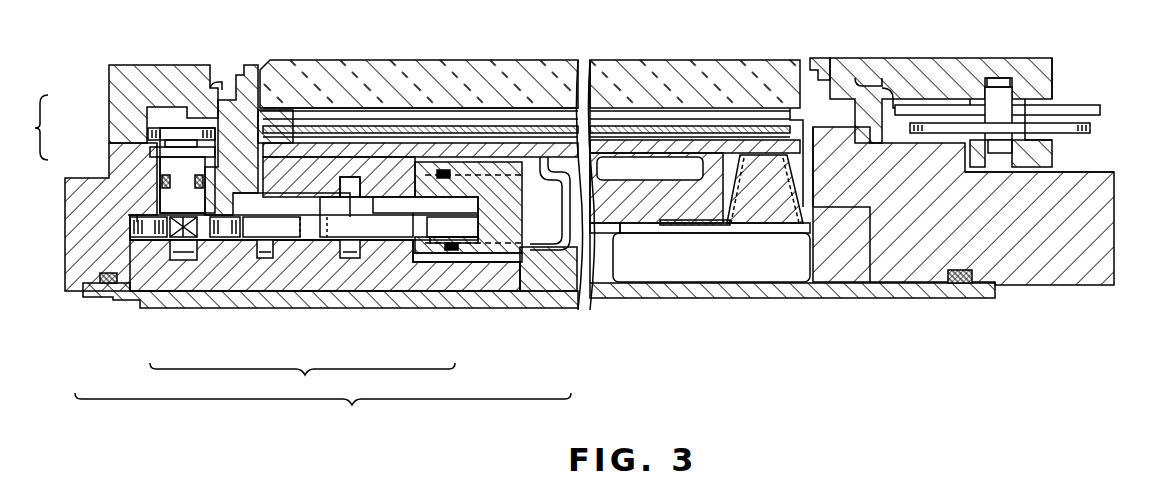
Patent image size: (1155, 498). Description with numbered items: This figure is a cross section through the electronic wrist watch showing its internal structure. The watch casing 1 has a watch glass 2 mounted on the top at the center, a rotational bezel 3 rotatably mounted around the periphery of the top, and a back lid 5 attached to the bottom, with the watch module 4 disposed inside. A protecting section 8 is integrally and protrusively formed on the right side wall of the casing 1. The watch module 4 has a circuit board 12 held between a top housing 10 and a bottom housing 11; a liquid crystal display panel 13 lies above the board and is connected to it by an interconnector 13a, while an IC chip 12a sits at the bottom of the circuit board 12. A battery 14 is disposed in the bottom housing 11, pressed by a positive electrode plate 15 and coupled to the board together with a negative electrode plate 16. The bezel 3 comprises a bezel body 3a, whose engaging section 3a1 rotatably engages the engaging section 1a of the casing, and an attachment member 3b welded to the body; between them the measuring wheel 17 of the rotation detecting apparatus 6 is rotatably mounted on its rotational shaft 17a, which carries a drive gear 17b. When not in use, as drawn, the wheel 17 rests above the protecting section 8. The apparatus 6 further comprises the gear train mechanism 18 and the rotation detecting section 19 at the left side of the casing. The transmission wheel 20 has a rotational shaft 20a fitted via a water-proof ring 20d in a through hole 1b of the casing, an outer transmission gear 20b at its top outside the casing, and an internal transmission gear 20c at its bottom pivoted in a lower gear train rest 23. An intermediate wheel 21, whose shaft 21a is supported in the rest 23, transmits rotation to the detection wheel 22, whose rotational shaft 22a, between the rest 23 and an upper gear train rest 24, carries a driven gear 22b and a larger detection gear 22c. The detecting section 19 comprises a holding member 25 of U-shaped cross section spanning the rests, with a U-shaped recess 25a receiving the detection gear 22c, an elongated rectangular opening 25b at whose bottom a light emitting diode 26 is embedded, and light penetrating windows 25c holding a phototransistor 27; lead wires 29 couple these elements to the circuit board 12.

The watch casing 1 is at (1083, 229).
The engaging section 1a is at (230, 88).
The through hole 1b is at (155, 198).
The watch glass 2 is at (650, 68).
The rotational bezel 3 is at (150, 75).
The bezel body 3a is at (1035, 62).
The engaging section 3a1 is at (880, 40).
The attachment member 3b is at (1052, 150).
The watch module 4 is at (730, 140).
The back lid 5 is at (867, 300).
The rotation detecting apparatus 6 is at (323, 411).
The protecting section 8 is at (1108, 172).
The top housing 10 is at (790, 127).
The bottom housing 11 is at (642, 218).
The circuit board 12 is at (627, 145).
The IC chip 12a is at (668, 163).
The liquid crystal display panel 13 is at (707, 120).
The interconnector 13a is at (537, 140).
The battery 14 is at (750, 270).
The positive electrode plate 15 is at (806, 233).
The negative electrode plate 16 is at (733, 224).
The measuring wheel 17 is at (1080, 106).
The rotational shaft 17a is at (997, 88).
The drive gear 17b is at (1091, 127).
The gear train mechanism 18 is at (304, 306).
The rotation detecting section 19 is at (492, 255).
The transmission wheel 20 is at (110, 154).
The rotational shaft 20a is at (152, 150).
The outer transmission gear 20b is at (152, 133).
The internal transmission gear 20c is at (163, 240).
The water-proof ring 20d is at (162, 190).
The intermediate wheel 21 is at (247, 238).
The shaft 21a is at (265, 258).
The detection wheel 22 is at (363, 221).
The rotational shaft 22a is at (350, 250).
The driven gear 22b is at (392, 232).
The detection gear 22c is at (405, 205).
The lower gear train rest 23 is at (213, 268).
The upper gear train rest 24 is at (320, 165).
The holding member 25 is at (522, 200).
The U-shaped recess 25a is at (510, 218).
The elongated rectangular opening 25b is at (522, 287).
The light penetrating windows 25c is at (465, 185).
The light emitting diode 26 is at (443, 242).
The phototransistor 27 is at (441, 170).
The lead wires 29 is at (563, 176).